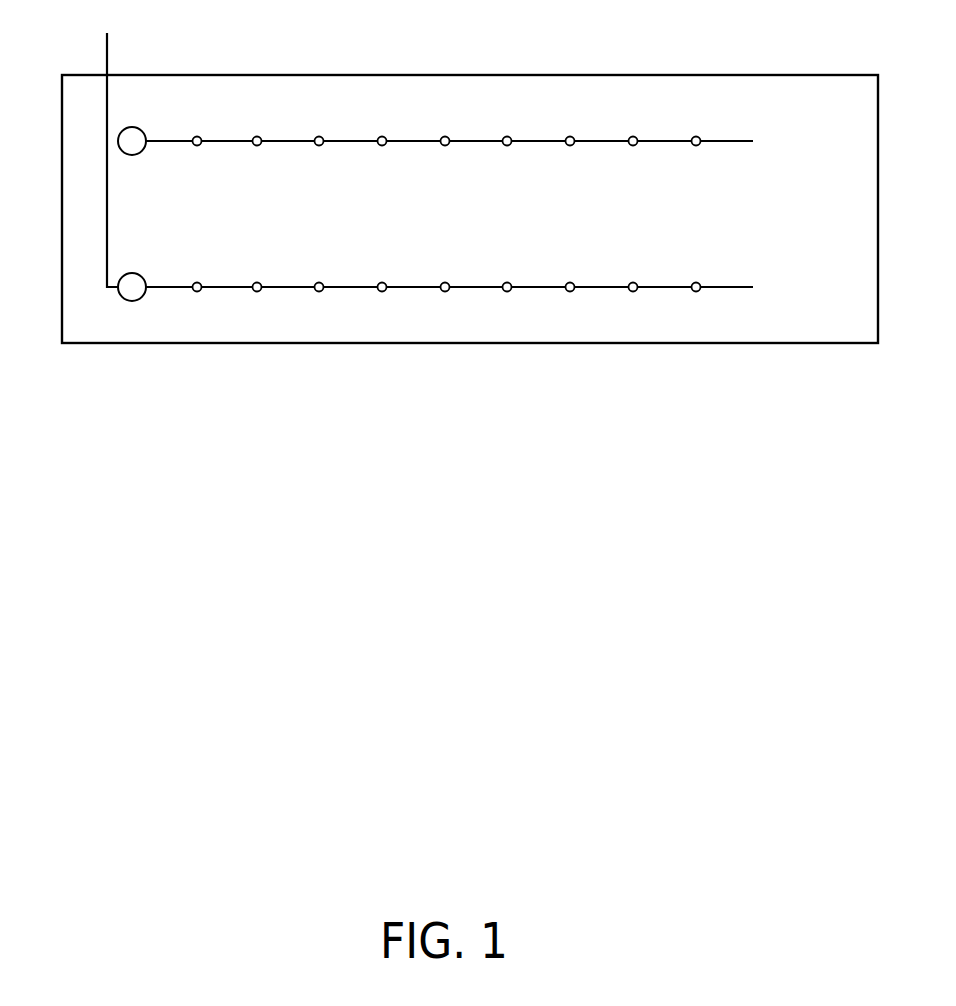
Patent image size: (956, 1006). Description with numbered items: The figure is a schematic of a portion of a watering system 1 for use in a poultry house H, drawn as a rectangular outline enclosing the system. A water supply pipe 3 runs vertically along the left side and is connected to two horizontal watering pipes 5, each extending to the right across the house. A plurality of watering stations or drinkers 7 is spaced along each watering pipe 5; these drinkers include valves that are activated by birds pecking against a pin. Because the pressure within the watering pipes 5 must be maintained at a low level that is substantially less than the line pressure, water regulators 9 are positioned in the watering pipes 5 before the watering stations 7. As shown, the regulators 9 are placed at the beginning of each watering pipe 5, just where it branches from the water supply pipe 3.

The watering system 1 is at (98, 232).
The water supply pipe 3 is at (107, 53).
The watering pipe 5 is at (353, 142).
The watering station 7 is at (198, 146).
The water regulator 9 is at (138, 128).
The poultry house H is at (377, 76).